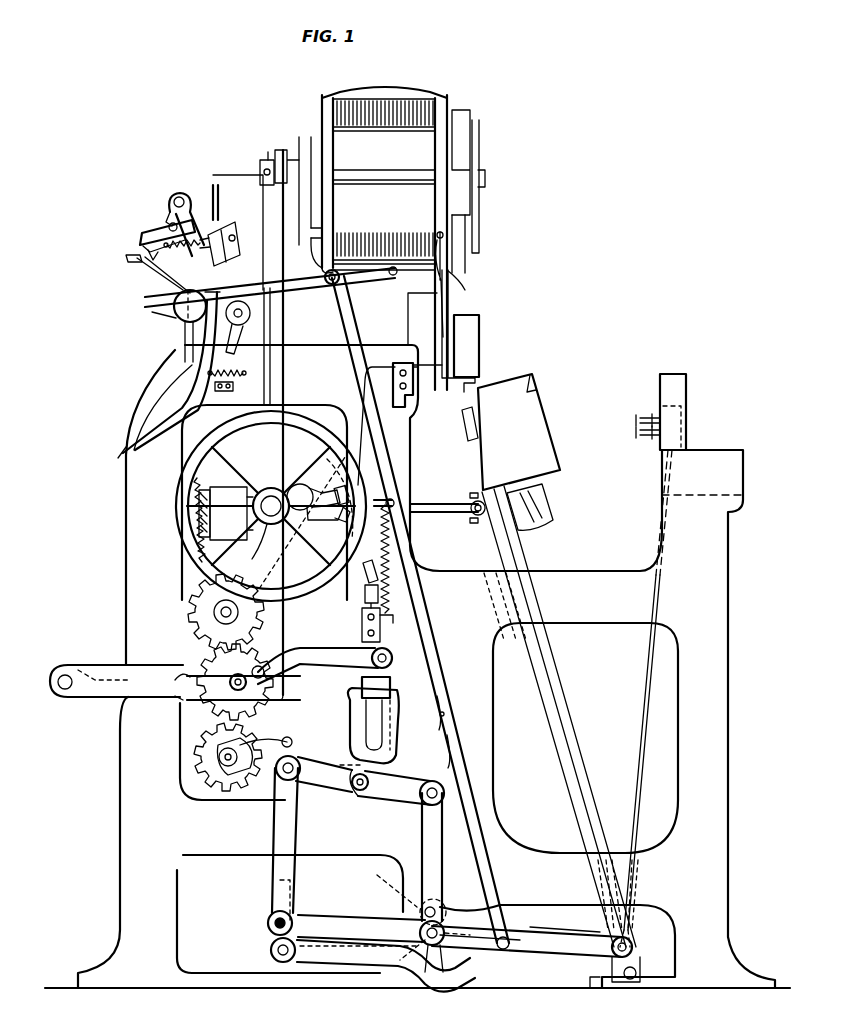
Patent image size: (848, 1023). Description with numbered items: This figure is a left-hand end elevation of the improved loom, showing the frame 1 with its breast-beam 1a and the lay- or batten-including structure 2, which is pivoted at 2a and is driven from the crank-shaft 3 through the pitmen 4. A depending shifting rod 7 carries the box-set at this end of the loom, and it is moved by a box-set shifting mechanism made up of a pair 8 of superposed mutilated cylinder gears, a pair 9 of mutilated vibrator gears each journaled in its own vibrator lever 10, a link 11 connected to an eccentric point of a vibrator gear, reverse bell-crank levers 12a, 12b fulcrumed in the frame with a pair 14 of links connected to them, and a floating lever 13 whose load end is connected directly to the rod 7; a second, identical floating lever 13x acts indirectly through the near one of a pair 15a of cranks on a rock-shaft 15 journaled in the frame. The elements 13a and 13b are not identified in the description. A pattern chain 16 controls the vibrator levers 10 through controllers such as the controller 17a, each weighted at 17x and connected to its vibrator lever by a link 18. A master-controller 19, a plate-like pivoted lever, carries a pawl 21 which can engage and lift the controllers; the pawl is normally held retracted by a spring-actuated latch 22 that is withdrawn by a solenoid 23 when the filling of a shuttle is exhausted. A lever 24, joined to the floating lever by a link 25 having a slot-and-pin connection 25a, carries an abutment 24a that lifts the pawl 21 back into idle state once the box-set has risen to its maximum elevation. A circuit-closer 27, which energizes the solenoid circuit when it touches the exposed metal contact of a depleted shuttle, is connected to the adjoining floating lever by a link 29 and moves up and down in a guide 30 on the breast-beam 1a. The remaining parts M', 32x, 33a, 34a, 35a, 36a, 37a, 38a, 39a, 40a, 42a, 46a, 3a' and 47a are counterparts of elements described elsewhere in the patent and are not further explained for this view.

The frame 1 is at (728, 823).
The breast-beam 1a is at (700, 500).
The lay- or batten-including structure 2 is at (565, 752).
The pivot of the lay structure 2a is at (632, 950).
The crank-shaft 3 is at (271, 519).
The counterpart of element 3a 3a' is at (306, 520).
The pitmen 4 is at (445, 515).
The shifting rod 7 is at (582, 817).
The pair of superposed mutilated cylinder gears 8 is at (180, 688).
The pair of mutilated vibrator gears 9 is at (250, 652).
The vibrator lever 10 is at (140, 696).
The link 11 is at (325, 655).
The reverse bell-crank lever 12a is at (406, 790).
The reverse bell-crank lever 12b is at (330, 775).
The floating lever 13 is at (342, 908).
The link pivot 13a is at (432, 945).
The link pivot 13b is at (276, 926).
The floating lever 13x is at (328, 952).
The pair of links 14 is at (420, 845).
The rock-shaft 15 is at (380, 876).
The pair of cranks 15a is at (540, 922).
The pattern chain 16 is at (233, 343).
The controller 17a is at (160, 272).
The controller weight 17x is at (182, 316).
The link 18 is at (284, 388).
The master-controller 19 is at (184, 196).
The pawl 21 is at (147, 237).
The spring-actuated latch 22 is at (218, 212).
The solenoid 23 is at (222, 266).
The lever 24 is at (318, 290).
The abutment 24a is at (126, 262).
The link 25 is at (444, 665).
The slot-and-pin connection 25a is at (452, 738).
The circuit-closer 27 is at (636, 433).
The link 29 is at (648, 679).
The guide 30 is at (698, 395).
The counterpart of element 32 32x is at (438, 338).
The counterpart of element 33 33a is at (422, 302).
The counterpart of element 34 34a is at (406, 420).
The counterpart of element 35 35a is at (364, 588).
The counterpart of element 36 36a is at (380, 630).
The counterpart of element 37 37a is at (390, 582).
The counterpart of element 38 38a is at (398, 360).
The counterpart of element 39 39a is at (262, 492).
The counterpart of element 40 40a is at (196, 575).
The counterpart of element 42 42a is at (186, 435).
The counterpart of element 46 46a is at (330, 520).
The counterpart of element 47 47a is at (300, 470).
The counterpart of element M M' is at (459, 331).